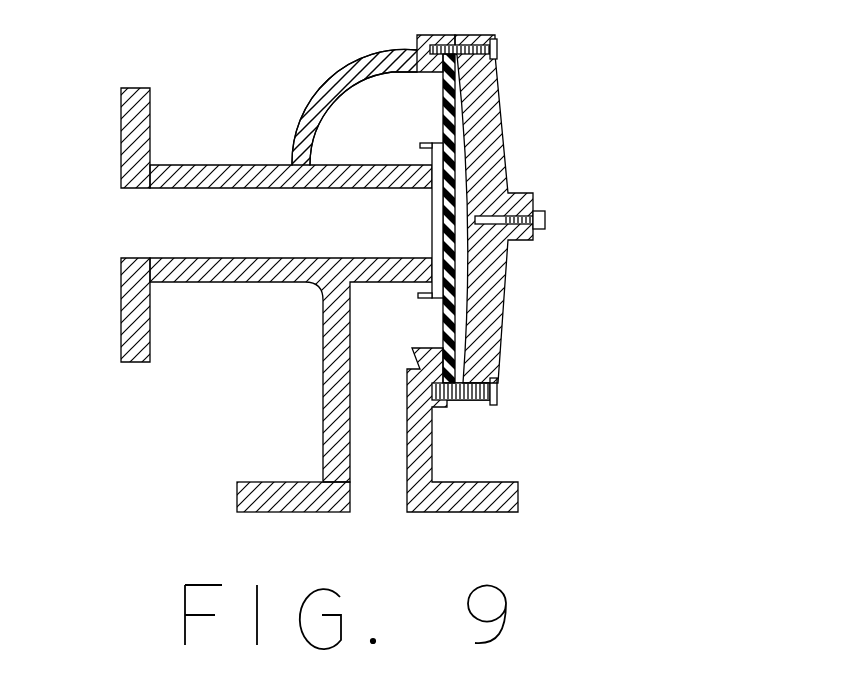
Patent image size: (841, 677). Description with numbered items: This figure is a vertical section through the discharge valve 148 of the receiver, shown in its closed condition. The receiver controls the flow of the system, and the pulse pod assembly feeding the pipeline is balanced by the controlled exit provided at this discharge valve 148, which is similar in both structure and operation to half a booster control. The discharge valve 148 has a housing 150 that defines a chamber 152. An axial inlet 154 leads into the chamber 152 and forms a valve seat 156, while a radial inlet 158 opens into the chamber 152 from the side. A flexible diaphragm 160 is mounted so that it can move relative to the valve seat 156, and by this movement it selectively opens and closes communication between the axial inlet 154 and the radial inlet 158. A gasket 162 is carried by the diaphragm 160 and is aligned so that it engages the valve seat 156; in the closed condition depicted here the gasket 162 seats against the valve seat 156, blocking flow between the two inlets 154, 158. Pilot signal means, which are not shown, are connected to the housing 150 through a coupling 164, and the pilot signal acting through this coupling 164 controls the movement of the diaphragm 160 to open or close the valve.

The discharge valve 148 is at (207, 373).
The housing 150 is at (270, 163).
The chamber 152 is at (378, 128).
The axial inlet 154 is at (121, 222).
The valve seat 156 is at (428, 257).
The radial inlet 158 is at (428, 537).
The flexible diaphragm 160 is at (462, 182).
The gasket 162 is at (547, 310).
The coupling 164 is at (580, 220).